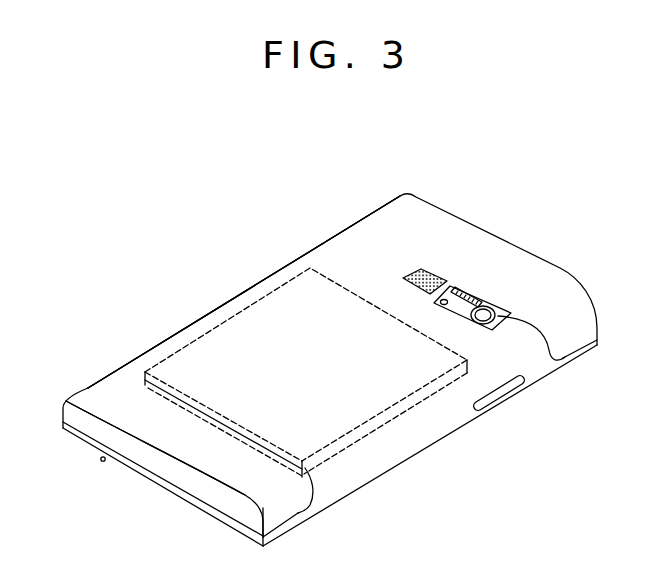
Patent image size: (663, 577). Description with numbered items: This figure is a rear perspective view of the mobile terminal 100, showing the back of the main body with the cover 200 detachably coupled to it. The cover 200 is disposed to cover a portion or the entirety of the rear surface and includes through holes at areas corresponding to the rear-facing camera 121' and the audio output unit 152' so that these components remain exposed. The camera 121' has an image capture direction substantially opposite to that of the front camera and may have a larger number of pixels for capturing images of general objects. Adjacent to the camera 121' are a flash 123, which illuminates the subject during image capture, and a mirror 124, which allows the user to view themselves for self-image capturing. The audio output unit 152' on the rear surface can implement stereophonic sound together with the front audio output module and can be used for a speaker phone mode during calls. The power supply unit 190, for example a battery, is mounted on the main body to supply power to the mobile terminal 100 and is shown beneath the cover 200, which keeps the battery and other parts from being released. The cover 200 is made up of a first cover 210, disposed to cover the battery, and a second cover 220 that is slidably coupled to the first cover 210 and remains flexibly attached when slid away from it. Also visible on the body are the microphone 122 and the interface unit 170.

The mobile terminal 100 is at (238, 224).
The power supply unit 190 is at (223, 321).
The cover 200 is at (160, 282).
The first cover 210 is at (150, 352).
The second cover 220 is at (100, 381).
The microphone 122 is at (103, 461).
The audio output unit 152' is at (421, 223).
The mirror 124 is at (443, 298).
The flash 123 is at (467, 296).
The camera 121' is at (527, 270).
The interface unit 170 is at (503, 390).